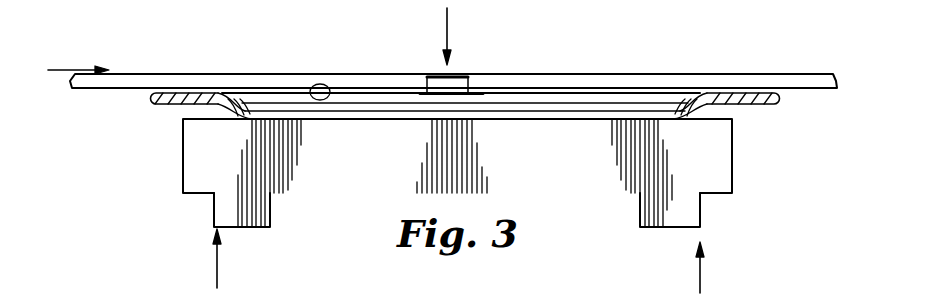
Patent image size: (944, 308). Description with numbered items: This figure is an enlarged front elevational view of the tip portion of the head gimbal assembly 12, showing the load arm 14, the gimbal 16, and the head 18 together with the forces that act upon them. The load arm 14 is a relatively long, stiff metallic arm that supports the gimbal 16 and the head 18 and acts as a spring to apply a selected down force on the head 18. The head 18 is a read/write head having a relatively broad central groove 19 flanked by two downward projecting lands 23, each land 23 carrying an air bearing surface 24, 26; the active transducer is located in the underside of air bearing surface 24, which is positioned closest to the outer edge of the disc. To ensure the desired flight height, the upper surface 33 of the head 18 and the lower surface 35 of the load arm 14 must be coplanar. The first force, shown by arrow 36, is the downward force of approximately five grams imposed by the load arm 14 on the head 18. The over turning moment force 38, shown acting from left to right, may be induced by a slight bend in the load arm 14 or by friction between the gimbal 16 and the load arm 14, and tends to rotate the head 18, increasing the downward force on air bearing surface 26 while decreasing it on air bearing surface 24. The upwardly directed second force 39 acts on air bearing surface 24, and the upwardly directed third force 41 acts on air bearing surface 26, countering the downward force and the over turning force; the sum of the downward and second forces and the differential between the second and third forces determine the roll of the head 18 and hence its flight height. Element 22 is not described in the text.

The head gimbal assembly 12 is at (347, 63).
The load arm 14 is at (653, 84).
The gimbal 16 is at (563, 113).
The head 18 is at (720, 177).
The central groove 19 is at (590, 195).
The adhesive layer 22 is at (365, 80).
The lands 23 is at (230, 202).
The air bearing surface 24 is at (258, 228).
The air bearing surface 26 is at (660, 229).
The upper surface 33 is at (381, 118).
The lower surface 35 is at (118, 88).
The arrow 36 is at (447, 27).
The over turning moment force 38 is at (80, 70).
The upwardly directed force 39 is at (216, 249).
The upwardly directed force 41 is at (697, 280).